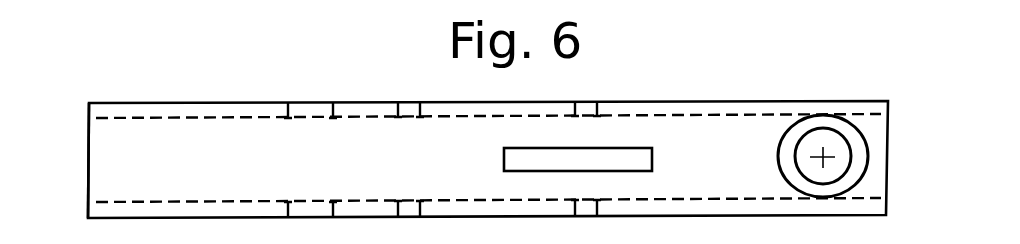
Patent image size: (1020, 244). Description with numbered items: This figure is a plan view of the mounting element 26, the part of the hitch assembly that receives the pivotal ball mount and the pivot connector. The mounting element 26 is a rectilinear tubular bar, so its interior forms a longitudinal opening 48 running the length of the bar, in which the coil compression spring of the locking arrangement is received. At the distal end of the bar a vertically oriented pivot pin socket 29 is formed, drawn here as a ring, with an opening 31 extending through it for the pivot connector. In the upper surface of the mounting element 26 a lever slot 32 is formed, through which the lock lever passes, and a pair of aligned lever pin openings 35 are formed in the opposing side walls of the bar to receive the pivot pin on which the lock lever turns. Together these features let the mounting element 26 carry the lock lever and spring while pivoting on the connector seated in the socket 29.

The mounting element 26 is at (204, 103).
The longitudinal opening 48 is at (88, 172).
The lever pin openings 35 is at (626, 73).
The lever slot 32 is at (626, 155).
The pivot pin socket 29 is at (838, 115).
The opening 31 is at (835, 142).